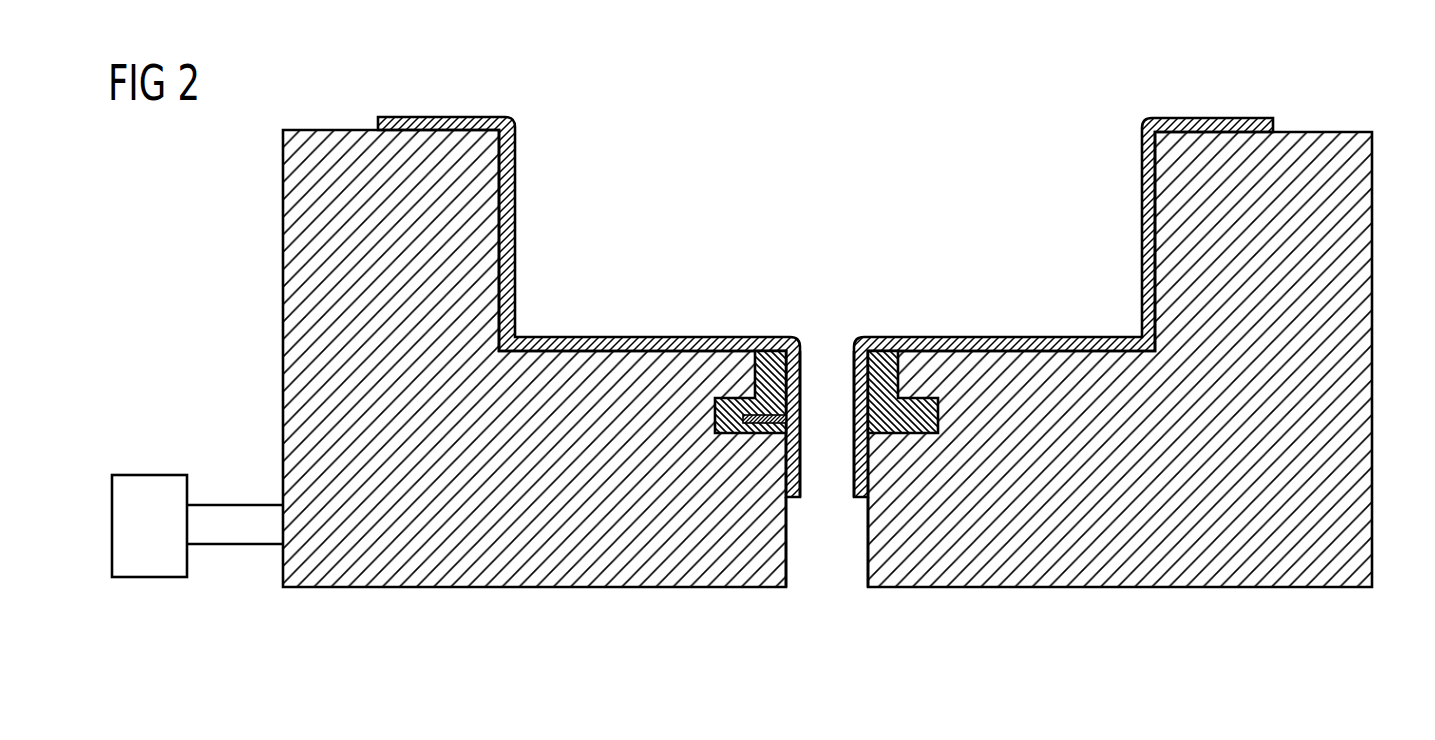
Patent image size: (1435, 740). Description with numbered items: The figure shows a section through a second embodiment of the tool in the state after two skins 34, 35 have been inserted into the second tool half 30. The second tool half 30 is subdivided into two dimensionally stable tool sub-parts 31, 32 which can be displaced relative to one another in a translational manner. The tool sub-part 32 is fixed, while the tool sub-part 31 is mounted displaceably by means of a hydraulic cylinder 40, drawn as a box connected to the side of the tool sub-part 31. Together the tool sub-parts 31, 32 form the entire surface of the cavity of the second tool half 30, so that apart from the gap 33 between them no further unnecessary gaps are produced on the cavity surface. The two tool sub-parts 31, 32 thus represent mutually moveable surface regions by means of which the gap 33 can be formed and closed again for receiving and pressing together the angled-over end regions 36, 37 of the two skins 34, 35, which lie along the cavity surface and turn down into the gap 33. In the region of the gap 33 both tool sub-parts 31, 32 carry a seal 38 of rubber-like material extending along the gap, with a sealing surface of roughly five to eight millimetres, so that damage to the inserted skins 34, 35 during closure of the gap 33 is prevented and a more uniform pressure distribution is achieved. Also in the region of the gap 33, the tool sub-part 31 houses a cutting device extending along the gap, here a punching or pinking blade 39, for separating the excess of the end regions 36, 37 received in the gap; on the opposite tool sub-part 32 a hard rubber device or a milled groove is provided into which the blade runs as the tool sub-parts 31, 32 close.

The second tool half 30 is at (808, 602).
The tool sub-part 31 is at (553, 576).
The tool sub-part 32 is at (1155, 577).
The gap 33 is at (823, 553).
The skin 34 is at (615, 337).
The skin 35 is at (1020, 337).
The end region 36 is at (796, 452).
The end region 37 is at (860, 446).
The seal 38 is at (768, 360).
The punching or pinking blade 39 is at (762, 423).
The hydraulic cylinder 40 is at (155, 567).